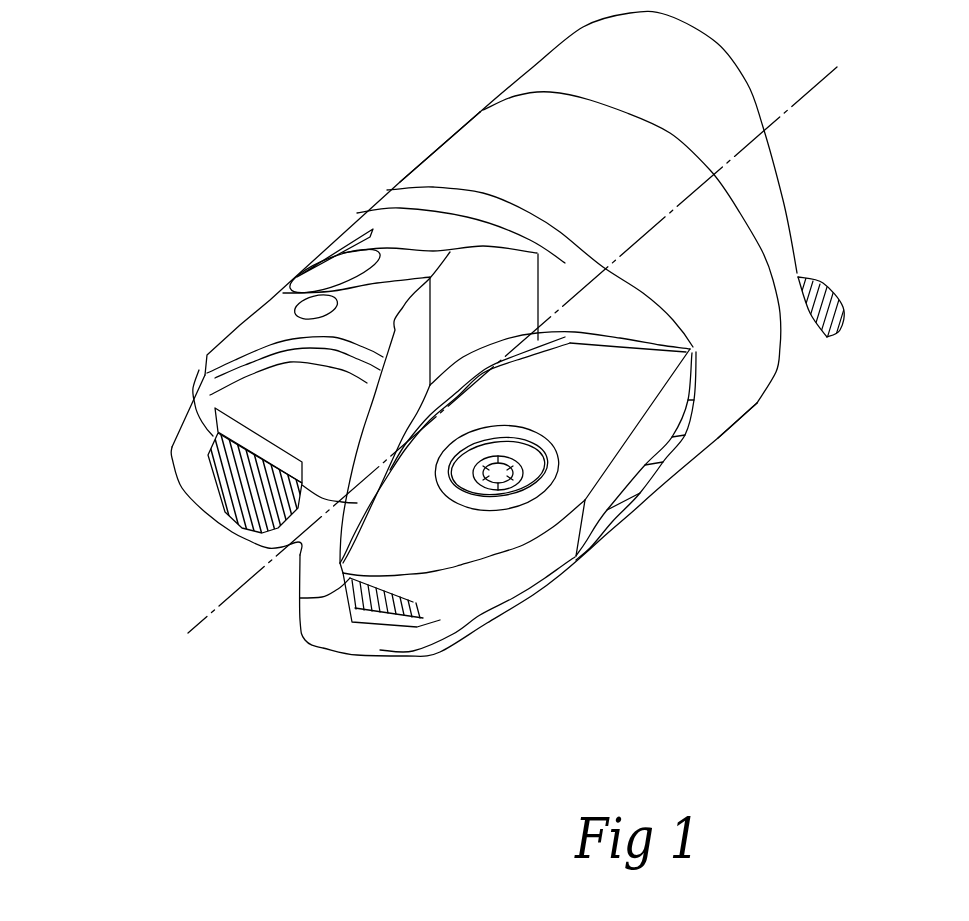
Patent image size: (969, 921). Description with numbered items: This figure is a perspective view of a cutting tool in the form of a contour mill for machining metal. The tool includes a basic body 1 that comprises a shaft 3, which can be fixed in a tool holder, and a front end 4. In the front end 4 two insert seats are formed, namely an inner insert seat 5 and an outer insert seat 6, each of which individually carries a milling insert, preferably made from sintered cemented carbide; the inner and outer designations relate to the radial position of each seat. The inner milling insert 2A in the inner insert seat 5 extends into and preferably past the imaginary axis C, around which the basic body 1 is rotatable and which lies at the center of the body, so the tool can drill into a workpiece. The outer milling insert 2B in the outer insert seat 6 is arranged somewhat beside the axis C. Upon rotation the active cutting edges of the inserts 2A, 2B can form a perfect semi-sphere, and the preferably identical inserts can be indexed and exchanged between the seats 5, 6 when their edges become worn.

The basic body 1 is at (762, 437).
The inner milling insert 2A is at (150, 492).
The outer milling insert 2B is at (570, 603).
The shaft 3 is at (790, 365).
The front end 4 is at (427, 158).
The inner insert seat 5 is at (280, 455).
The outer insert seat 6 is at (370, 626).
The imaginary axis C- C is at (513, 350).